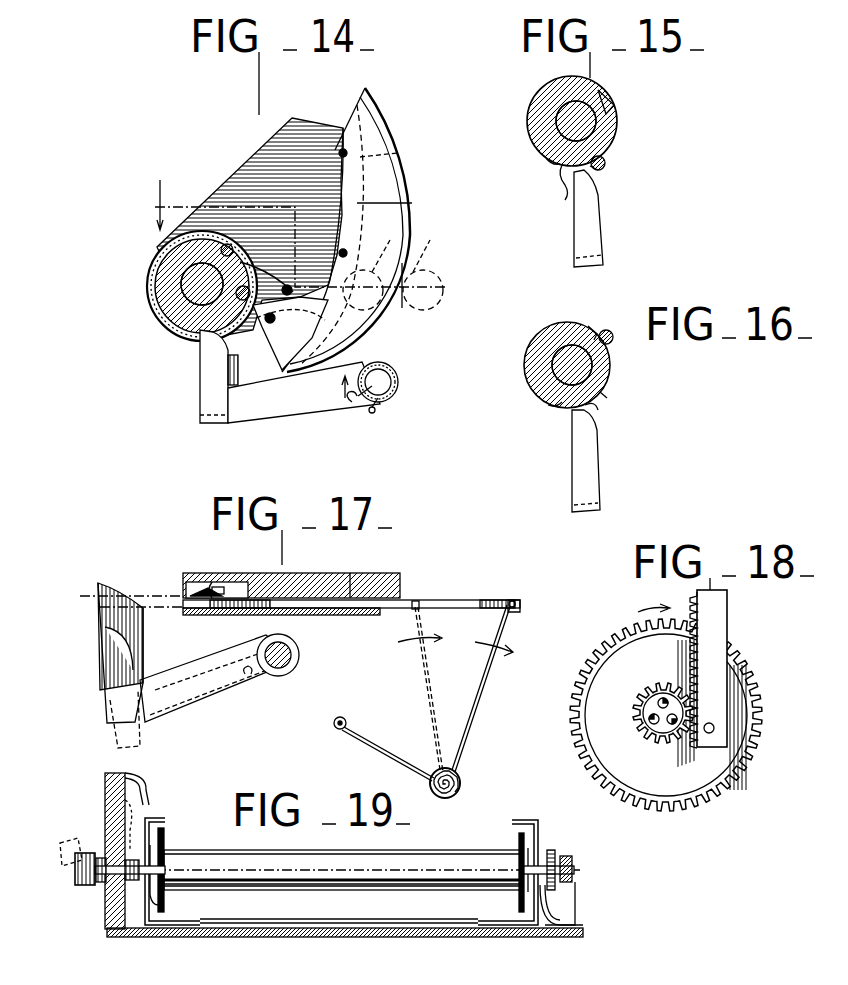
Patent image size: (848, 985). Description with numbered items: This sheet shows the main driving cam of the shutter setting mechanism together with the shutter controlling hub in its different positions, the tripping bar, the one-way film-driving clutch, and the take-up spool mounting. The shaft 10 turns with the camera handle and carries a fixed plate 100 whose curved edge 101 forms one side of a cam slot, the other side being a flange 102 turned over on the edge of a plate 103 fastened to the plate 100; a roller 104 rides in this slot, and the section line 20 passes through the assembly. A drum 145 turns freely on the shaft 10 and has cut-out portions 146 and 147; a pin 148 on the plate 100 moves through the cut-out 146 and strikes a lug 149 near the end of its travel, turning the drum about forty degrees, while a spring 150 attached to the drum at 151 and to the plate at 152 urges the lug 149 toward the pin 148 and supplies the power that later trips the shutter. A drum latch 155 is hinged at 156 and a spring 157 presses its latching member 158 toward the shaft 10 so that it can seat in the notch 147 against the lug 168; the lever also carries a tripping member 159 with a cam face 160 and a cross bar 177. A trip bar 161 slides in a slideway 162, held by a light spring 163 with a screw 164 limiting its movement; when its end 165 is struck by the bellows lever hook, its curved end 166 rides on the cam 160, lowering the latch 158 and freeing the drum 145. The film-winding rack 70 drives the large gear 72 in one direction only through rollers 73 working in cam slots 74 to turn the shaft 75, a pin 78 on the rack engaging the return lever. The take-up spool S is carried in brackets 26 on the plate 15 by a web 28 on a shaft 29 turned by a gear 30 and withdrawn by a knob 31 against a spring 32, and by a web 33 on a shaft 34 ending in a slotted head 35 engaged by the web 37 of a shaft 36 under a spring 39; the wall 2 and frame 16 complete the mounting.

In FIG. 14, the plate 100 is at (270, 175).
In FIG. 14, the curved edge 101 is at (405, 152).
In FIG. 14, the flange 102 is at (404, 178).
In FIG. 14, the plate 103 is at (408, 205).
In FIG. 14, the roller 104 is at (412, 232).
In FIG. 14, the section line 20 is at (300, 247).
In FIG. 14, the pin 148 is at (197, 248).
In FIG. 15, the pin 148 is at (606, 162).
In FIG. 16, the pin 148 is at (612, 342).
In FIG. 14, the spring attachment point on drum 151 is at (150, 268).
In FIG. 14, the shaft 10 is at (190, 284).
In FIG. 15, the shaft 10 is at (566, 122).
In FIG. 16, the shaft 10 is at (562, 352).
In FIG. 14, the spring 150 is at (152, 306).
In FIG. 14, the drum 145 is at (165, 322).
In FIG. 15, the drum 145 is at (552, 100).
In FIG. 16, the drum 145 is at (560, 326).
In FIG. 14, the lug 168 is at (196, 340).
In FIG. 15, the lug 168 is at (550, 168).
In FIG. 16, the lug 168 is at (564, 412).
In FIG. 14, the latching member 158 is at (215, 375).
In FIG. 15, the latching member 158 is at (600, 200).
In FIG. 16, the latching member 158 is at (583, 432).
In FIG. 17, the latching member 158 is at (110, 635).
In FIG. 14, the tripping member 159 is at (232, 386).
In FIG. 17, the tripping member 159 is at (145, 638).
In FIG. 14, the cross bar 177 is at (212, 418).
In FIG. 15, the cross bar 177 is at (604, 256).
In FIG. 16, the cross bar 177 is at (600, 498).
In FIG. 17, the cross bar 177 is at (118, 716).
In FIG. 14, the cut-out portion 146 is at (243, 250).
In FIG. 15, the cut-out portion 146 is at (616, 118).
In FIG. 16, the cut-out portion 146 is at (611, 370).
In FIG. 14, the spring attachment point on plate 152 is at (305, 280).
In FIG. 14, the lug 149 is at (290, 318).
In FIG. 15, the lug 149 is at (602, 172).
In FIG. 16, the lug 149 is at (610, 393).
In FIG. 14, the cut-out portion 147 is at (258, 344).
In FIG. 15, the cut-out portion 147 is at (566, 182).
In FIG. 16, the cut-out portion 147 is at (602, 408).
In FIG. 14, the drum latch 155 is at (278, 400).
In FIG. 17, the drum latch 155 is at (178, 696).
In FIG. 14, the hinge 156 is at (392, 382).
In FIG. 14, the spring 157 is at (362, 408).
In FIG. 17, the spring 157 is at (250, 676).
In FIG. 17, the cam face 160 is at (110, 594).
In FIG. 17, the trip bar 161 is at (283, 600).
In FIG. 17, the slideway 162 is at (356, 598).
In FIG. 17, the screw 164 is at (250, 592).
In FIG. 17, the end of trip bar 165 is at (517, 600).
In FIG. 17, the curved end 166 is at (226, 592).
In FIG. 17, the light spring 163 is at (492, 673).
In FIG. 18, the rack 70 is at (714, 607).
In FIG. 18, the large gear 72 is at (636, 648).
In FIG. 18, the rollers 73 is at (660, 737).
In FIG. 18, the cam slots 74 is at (674, 700).
In FIG. 18, the shaft 75 is at (656, 717).
In FIG. 18, the pin 78 is at (716, 729).
In FIG. 19, the side wall 2 is at (115, 839).
In FIG. 19, the plate 15 is at (395, 936).
In FIG. 19, the frame 16 is at (268, 926).
In FIG. 19, the brackets 26 is at (150, 818).
In FIG. 19, the web 28 is at (518, 842).
In FIG. 19, the shaft 29 is at (523, 888).
In FIG. 19, the gear 30 is at (552, 856).
In FIG. 19, the knob 31 is at (574, 864).
In FIG. 19, the spring 32 is at (577, 893).
In FIG. 19, the web 33 is at (168, 866).
In FIG. 19, the shaft 34 is at (160, 886).
In FIG. 19, the slotted head 35 is at (106, 896).
In FIG. 19, the shaft 36 is at (80, 878).
In FIG. 19, the web 37 is at (105, 822).
In FIG. 19, the spring 39 is at (105, 795).
In FIG. 19, the take-up spool S is at (290, 866).